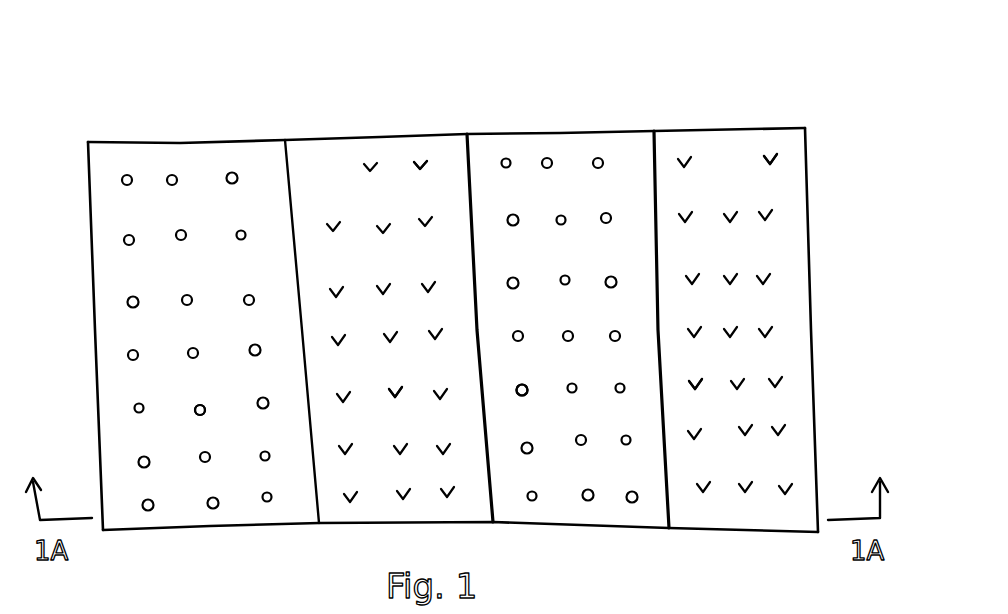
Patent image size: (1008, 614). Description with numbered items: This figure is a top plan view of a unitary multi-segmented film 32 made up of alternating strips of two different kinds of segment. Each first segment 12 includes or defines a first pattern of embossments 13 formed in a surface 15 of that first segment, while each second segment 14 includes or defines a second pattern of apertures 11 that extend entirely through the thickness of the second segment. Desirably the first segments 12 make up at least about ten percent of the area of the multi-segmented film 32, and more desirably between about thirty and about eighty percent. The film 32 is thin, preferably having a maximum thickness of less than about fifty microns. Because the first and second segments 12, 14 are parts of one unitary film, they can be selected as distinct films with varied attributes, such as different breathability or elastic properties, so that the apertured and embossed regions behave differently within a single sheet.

The unitary multi-segmented film 32 is at (540, 108).
The second pattern of apertures 11 is at (173, 176).
The first pattern of embossments 13 is at (326, 176).
The second segment 14 is at (234, 398).
The first segment 12 is at (412, 381).
The surface 15 is at (454, 201).